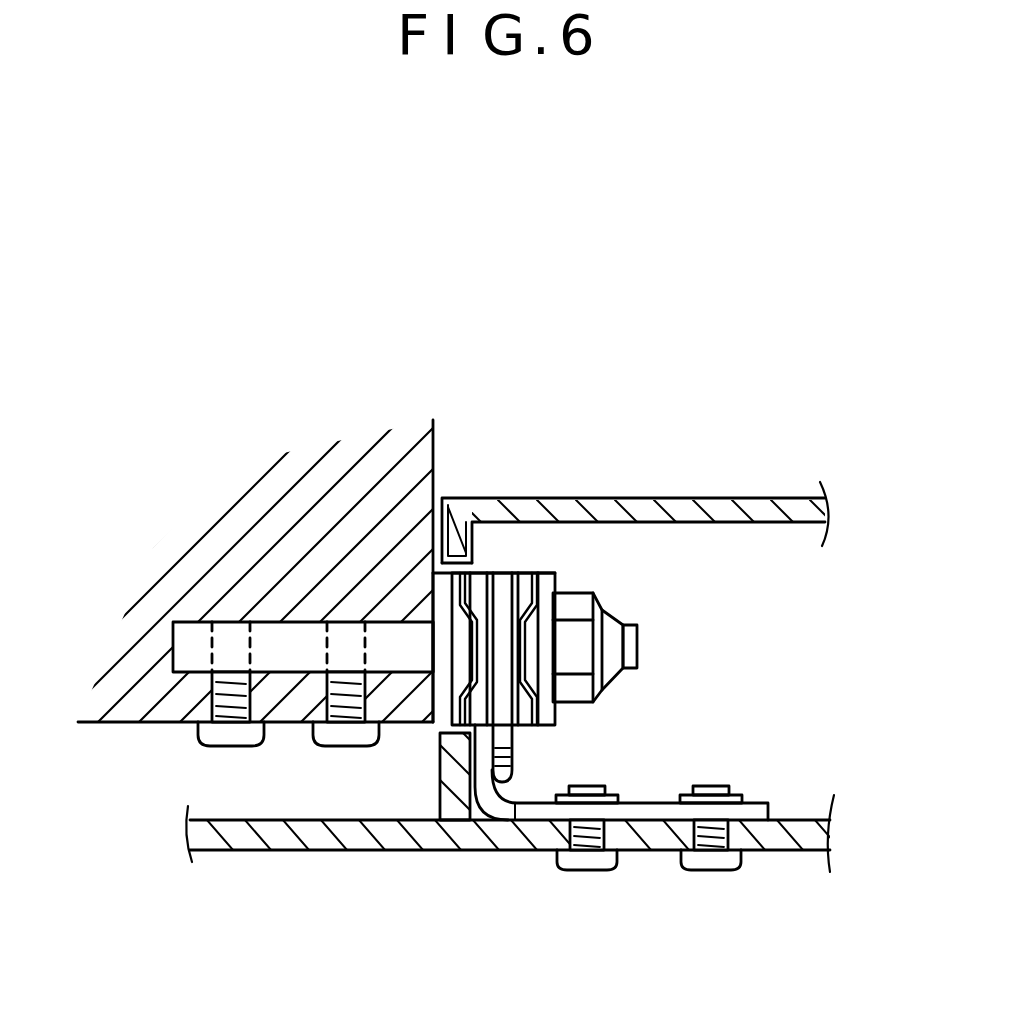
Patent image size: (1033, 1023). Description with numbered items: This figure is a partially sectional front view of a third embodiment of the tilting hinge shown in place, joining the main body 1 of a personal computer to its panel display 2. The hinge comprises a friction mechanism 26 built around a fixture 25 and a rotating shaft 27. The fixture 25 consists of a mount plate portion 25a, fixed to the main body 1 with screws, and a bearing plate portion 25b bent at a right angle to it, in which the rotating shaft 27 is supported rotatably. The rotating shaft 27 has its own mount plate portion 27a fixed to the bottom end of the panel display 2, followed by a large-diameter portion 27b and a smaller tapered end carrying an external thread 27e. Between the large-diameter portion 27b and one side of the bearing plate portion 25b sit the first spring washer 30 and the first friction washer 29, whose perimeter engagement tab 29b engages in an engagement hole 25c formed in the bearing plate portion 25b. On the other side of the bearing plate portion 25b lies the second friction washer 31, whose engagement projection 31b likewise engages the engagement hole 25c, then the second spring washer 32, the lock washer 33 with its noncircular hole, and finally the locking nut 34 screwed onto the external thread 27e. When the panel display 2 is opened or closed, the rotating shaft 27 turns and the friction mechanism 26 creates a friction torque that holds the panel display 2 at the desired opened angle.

The main body 1 is at (365, 858).
The panel display 2 is at (96, 708).
The fixture 25 is at (495, 830).
The mount plate portion 25a is at (752, 805).
The bearing plate portion 25b is at (508, 568).
The engagement hole 25c is at (515, 800).
The friction mechanism 26 is at (516, 572).
The rotating shaft 27 is at (398, 618).
The mount plate portion 27a is at (197, 672).
The large-diameter portion 27b is at (447, 707).
The external thread 27e is at (640, 650).
The first friction washer 29 is at (433, 460).
The engagement tab 29b is at (517, 745).
The first spring washer 30 is at (432, 612).
The second friction washer 31 is at (538, 572).
The engagement projection 31b is at (458, 826).
The second spring washer 32 is at (555, 572).
The lock washer 33 is at (556, 710).
The locking nut 34 is at (620, 606).